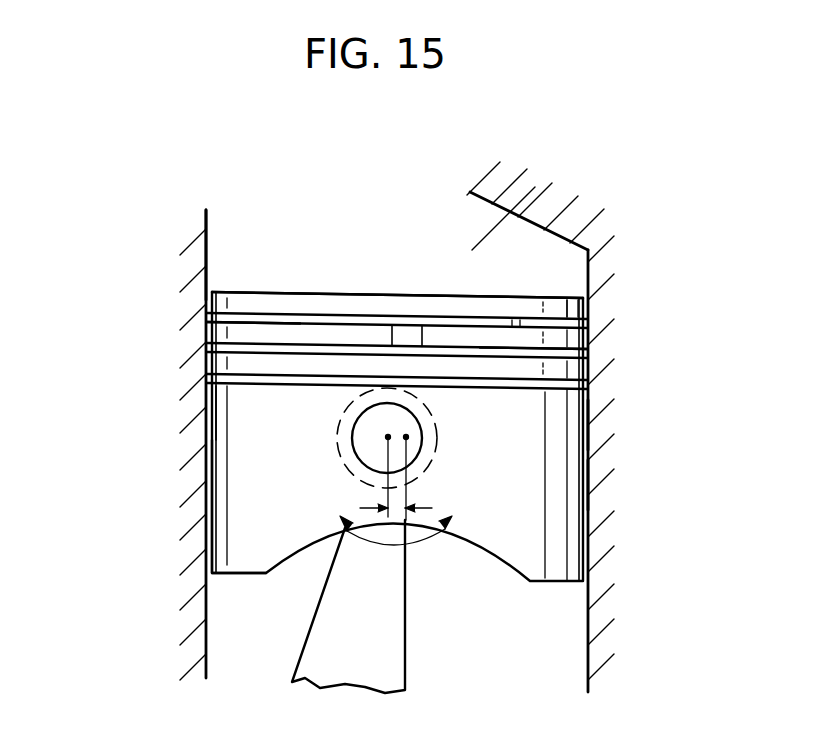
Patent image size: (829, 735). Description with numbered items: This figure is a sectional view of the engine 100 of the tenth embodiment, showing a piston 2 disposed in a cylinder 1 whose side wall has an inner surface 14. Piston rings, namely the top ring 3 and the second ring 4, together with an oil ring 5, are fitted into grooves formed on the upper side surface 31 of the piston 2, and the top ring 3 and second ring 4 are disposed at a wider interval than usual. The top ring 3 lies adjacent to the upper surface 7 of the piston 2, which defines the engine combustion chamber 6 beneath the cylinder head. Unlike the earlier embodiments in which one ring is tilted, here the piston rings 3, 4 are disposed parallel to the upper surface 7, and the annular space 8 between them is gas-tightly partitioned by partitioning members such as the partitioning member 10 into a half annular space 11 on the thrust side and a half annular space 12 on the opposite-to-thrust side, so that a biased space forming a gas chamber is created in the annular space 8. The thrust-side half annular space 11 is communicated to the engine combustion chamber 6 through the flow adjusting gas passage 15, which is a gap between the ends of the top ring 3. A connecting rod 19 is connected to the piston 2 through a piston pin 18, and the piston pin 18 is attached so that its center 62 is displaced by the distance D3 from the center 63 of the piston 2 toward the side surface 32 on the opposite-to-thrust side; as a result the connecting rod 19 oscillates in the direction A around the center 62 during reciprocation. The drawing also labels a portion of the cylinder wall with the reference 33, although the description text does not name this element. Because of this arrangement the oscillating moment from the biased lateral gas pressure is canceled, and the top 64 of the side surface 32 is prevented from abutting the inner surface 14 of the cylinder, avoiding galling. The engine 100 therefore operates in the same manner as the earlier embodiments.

The cylinder 1 is at (200, 604).
The piston 2 is at (227, 505).
The top ring 3 is at (292, 314).
The second ring 4 is at (210, 360).
The oil ring 5 is at (254, 384).
The engine combustion chamber 6 is at (535, 205).
The upper surface of the piston 7 is at (390, 293).
The annular space 8 is at (558, 345).
The partitioning member 10 is at (405, 330).
The half annular space on the thrust side 11 is at (590, 338).
The half annular space on the opposite-to-thrust side 12 is at (207, 323).
The inner surface of the side wall of the cylinder 14 is at (588, 616).
The flow adjusting gas passage 15 is at (518, 322).
The piston pin 18 is at (368, 448).
The connecting rod 19 is at (392, 648).
The upper side surface of the piston 31 is at (590, 430).
The side surface of the piston on the opposite-to-thrust side 32 is at (212, 404).
The cylinder wall lower portion 33 is at (590, 490).
The center of the piston pin 62 is at (398, 423).
The center of the piston 63 is at (406, 437).
The top of the side surface of the piston 64 is at (206, 285).
The engine 100 is at (134, 565).
The direction of oscillation A is at (377, 538).
The displacement distance D3 is at (410, 505).